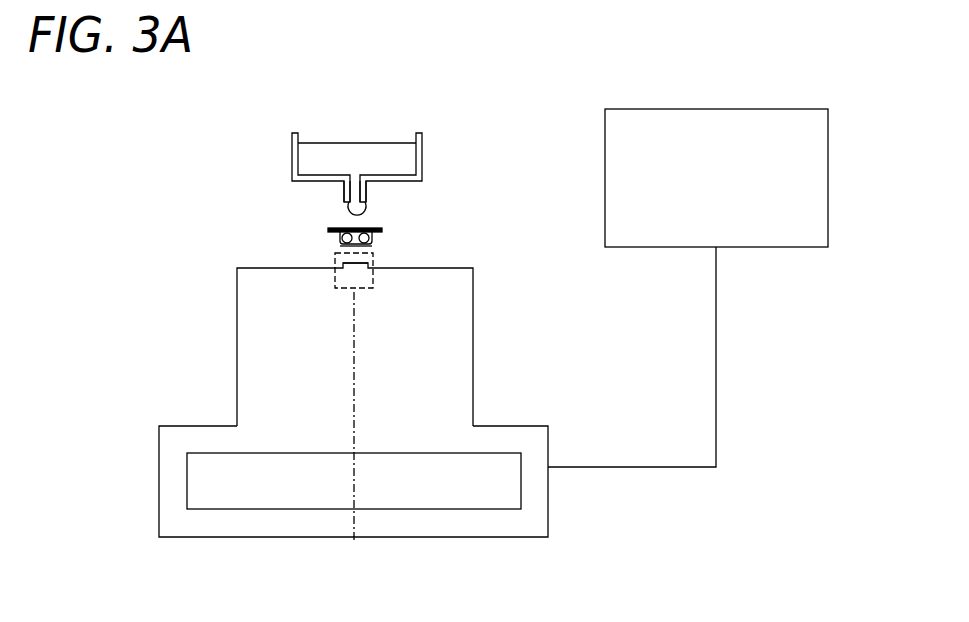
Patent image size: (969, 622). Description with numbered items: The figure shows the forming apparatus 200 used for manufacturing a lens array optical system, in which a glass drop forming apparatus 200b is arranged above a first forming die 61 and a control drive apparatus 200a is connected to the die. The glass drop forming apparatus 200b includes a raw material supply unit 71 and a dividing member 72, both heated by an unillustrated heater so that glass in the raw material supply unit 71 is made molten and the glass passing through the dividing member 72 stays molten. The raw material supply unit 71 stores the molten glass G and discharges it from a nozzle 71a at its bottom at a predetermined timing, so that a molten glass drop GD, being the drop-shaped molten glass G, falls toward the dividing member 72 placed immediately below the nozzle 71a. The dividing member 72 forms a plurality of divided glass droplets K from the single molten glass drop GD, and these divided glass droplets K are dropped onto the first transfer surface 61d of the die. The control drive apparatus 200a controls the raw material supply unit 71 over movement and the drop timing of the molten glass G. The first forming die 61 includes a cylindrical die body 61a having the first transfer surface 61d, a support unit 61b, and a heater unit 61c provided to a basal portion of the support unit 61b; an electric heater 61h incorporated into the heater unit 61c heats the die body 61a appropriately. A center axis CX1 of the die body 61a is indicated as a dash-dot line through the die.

The forming apparatus 200 is at (688, 233).
The control drive apparatus 200a is at (702, 132).
The glass drop forming apparatus 200b is at (379, 139).
The raw material supply unit 71 is at (371, 139).
The nozzle 71a is at (367, 193).
The molten glass G is at (351, 150).
The molten glass drop GD is at (347, 208).
The dividing member 72 is at (328, 232).
The divided glass droplets K is at (357, 245).
The first forming die 61 is at (310, 424).
The die body 61a is at (335, 292).
The support unit 61b is at (277, 328).
The heater unit 61c is at (177, 482).
The first transfer surface 61d is at (380, 253).
The electric heater 61h is at (314, 497).
The center axis CX1 is at (358, 380).